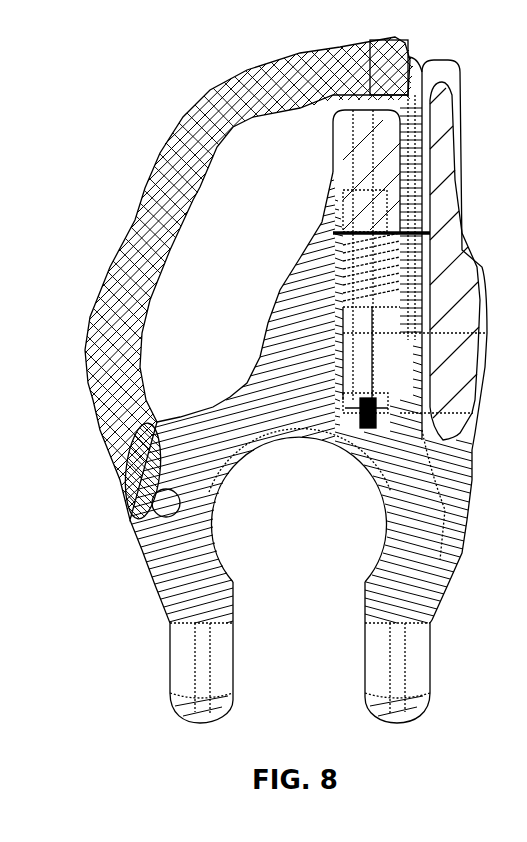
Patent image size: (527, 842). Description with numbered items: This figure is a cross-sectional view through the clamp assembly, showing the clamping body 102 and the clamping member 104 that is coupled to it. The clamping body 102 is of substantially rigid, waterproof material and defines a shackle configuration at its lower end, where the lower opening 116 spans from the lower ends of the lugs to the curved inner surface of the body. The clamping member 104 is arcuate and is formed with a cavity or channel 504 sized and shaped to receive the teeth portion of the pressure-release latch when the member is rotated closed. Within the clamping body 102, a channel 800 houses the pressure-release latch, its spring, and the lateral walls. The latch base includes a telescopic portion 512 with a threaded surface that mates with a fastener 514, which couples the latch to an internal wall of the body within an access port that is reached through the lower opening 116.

The clamping body 102 is at (150, 547).
The clamping member 104 is at (145, 190).
The lower opening 116 is at (321, 574).
The cavity or channel 504 is at (376, 90).
The telescopic portion 512 is at (362, 395).
The fastener 514 is at (362, 428).
The channel 800 is at (334, 327).